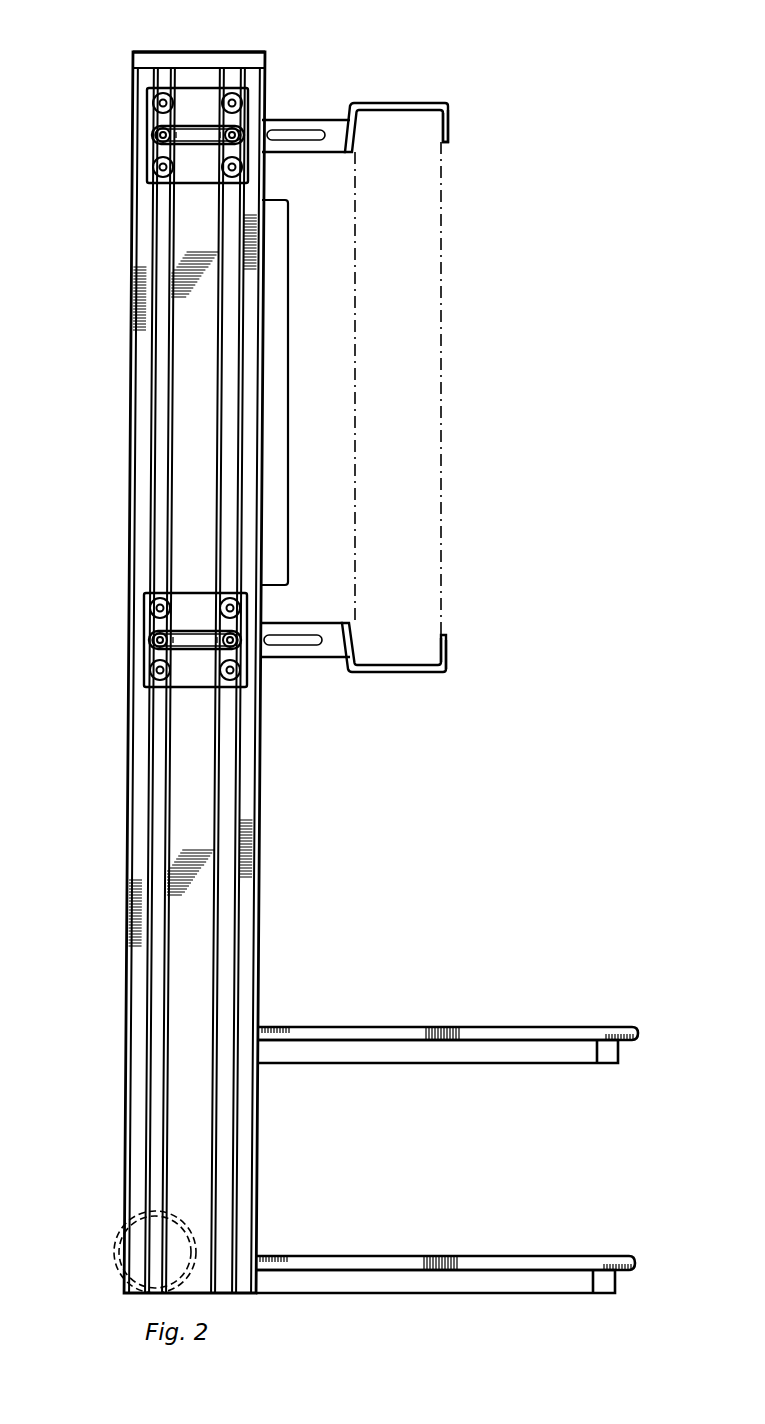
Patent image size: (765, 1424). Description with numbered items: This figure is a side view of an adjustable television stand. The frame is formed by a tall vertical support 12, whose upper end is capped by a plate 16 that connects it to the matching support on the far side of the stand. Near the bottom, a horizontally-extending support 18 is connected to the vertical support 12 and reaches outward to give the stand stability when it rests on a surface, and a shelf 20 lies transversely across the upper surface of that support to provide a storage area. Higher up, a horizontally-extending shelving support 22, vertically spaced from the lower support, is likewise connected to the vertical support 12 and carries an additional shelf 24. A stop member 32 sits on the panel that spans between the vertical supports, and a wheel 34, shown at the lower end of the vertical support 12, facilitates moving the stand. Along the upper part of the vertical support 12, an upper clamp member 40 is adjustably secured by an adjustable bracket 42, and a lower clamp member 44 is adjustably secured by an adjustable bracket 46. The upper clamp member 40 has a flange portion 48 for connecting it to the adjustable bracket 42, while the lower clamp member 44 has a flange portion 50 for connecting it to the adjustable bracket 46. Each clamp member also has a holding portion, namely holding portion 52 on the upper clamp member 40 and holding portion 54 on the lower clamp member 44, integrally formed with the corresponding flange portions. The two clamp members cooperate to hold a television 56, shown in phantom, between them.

The vertical support 12 is at (126, 391).
The plate 16 is at (200, 52).
The horizontally-extending support 18 is at (550, 1293).
The shelf 20 is at (498, 1255).
The horizontally-extending shelving support 22 is at (552, 1063).
The additional shelf 24 is at (532, 1026).
The stop member 32 is at (288, 285).
The wheel 34 is at (115, 1248).
The upper clamp member 40 is at (404, 95).
The adjustable bracket 42 is at (146, 120).
The lower clamp member 44 is at (400, 680).
The adjustable bracket 46 is at (143, 653).
The flange portion 48 is at (305, 118).
The flange portion 50 is at (300, 658).
The holding portion 52 is at (450, 128).
The holding portion 54 is at (446, 650).
The television 56 is at (441, 357).